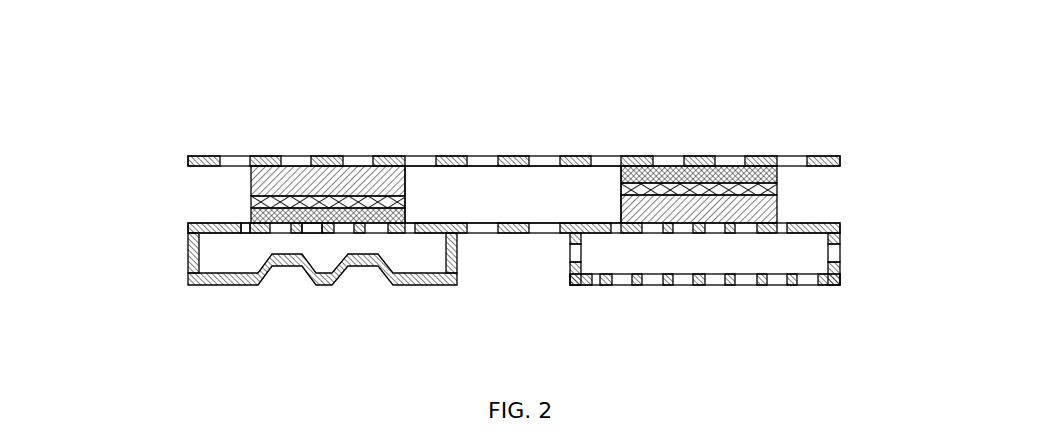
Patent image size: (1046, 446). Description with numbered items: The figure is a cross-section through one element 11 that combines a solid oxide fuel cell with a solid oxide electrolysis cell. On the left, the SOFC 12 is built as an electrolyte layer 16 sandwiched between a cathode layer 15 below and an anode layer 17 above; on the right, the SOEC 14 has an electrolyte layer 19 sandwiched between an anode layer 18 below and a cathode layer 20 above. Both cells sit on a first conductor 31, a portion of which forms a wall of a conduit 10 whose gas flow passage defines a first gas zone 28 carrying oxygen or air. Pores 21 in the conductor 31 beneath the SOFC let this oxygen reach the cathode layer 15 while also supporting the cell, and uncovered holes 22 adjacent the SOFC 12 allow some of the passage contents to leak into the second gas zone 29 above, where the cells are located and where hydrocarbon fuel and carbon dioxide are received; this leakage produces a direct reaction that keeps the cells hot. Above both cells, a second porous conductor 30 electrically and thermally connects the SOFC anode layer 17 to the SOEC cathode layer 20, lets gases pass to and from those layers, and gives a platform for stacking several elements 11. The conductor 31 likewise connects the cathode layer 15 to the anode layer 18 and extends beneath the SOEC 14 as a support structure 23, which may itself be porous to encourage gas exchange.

The conduit 10 is at (188, 263).
The element 11 is at (216, 121).
The SOFC 12 is at (127, 147).
The SOEC 14 is at (878, 150).
The cathode layer 15 is at (251, 216).
The electrolyte layer 16 is at (252, 202).
The anode layer 17 is at (255, 182).
The anode layer 18 is at (762, 204).
The electrolyte layer 19 is at (772, 188).
The cathode layer 20 is at (772, 173).
The pores 21 is at (308, 230).
The uncovered holes 22 is at (246, 227).
The support structure 23 is at (830, 283).
The first gas zone 28 is at (422, 258).
The second gas zone 29 is at (505, 201).
The second porous conductor 30 is at (510, 156).
The first conductor 31 is at (517, 225).